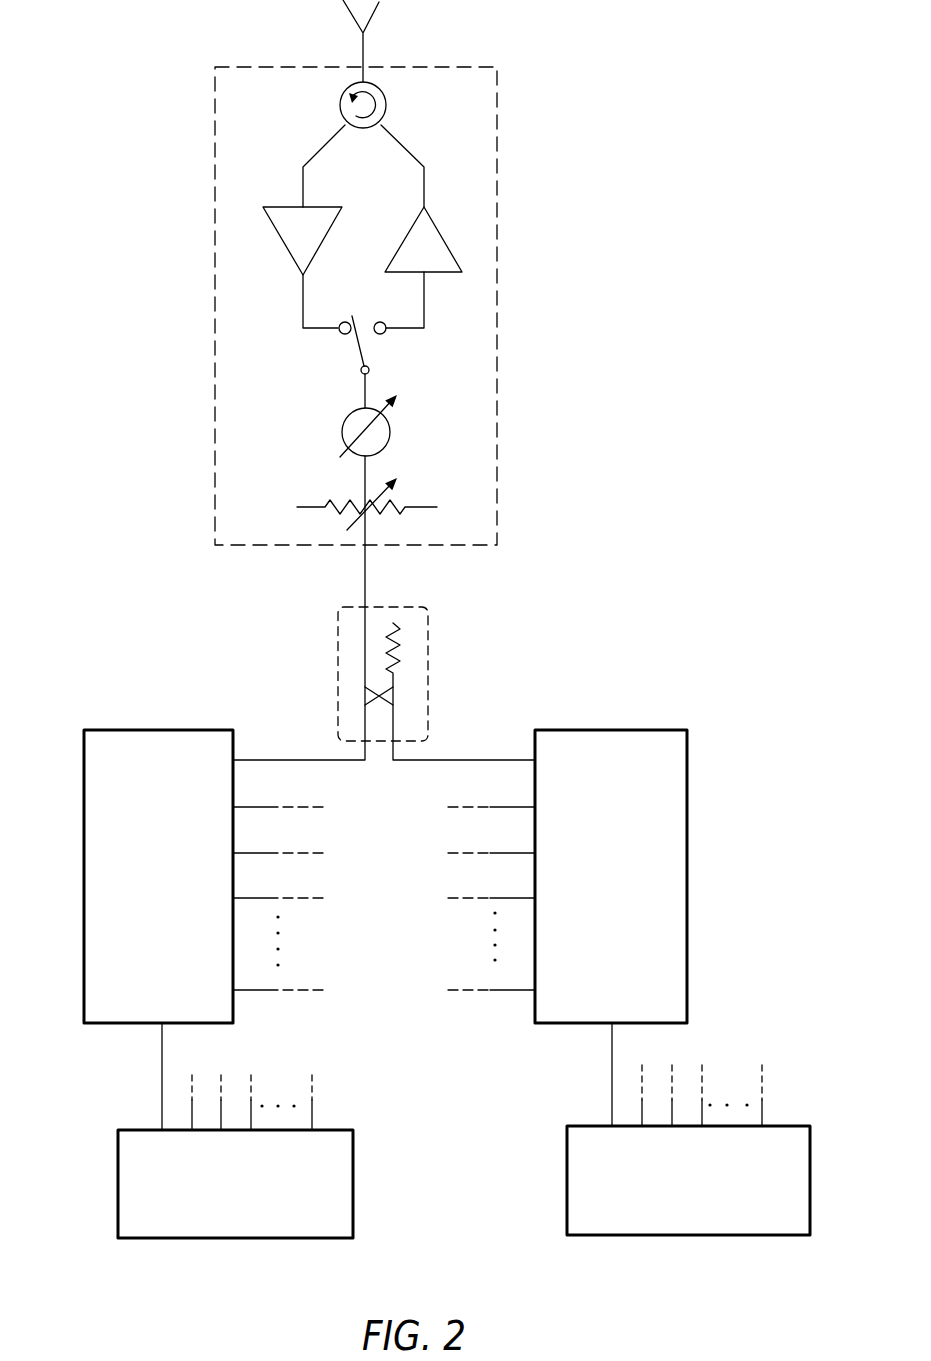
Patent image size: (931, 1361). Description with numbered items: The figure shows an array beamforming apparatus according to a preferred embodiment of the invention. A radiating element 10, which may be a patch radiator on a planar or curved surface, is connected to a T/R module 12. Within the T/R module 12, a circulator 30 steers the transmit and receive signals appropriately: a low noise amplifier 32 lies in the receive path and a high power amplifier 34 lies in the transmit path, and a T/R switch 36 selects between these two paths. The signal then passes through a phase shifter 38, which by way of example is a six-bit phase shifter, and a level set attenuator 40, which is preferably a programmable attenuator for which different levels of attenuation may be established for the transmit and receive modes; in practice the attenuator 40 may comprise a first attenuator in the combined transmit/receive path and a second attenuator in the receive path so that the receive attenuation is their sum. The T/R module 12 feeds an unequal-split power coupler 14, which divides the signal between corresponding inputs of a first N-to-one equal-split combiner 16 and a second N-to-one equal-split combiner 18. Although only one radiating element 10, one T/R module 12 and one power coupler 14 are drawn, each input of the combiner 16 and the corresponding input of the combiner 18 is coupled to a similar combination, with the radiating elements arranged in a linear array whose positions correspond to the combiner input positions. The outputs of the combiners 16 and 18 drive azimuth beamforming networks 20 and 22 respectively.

The radiating element 10 is at (349, 13).
The T/R module 12 is at (255, 62).
The unequal-split power coupler 14 is at (428, 641).
The first N:1 equal-split combiner 16 is at (147, 728).
The second N:1 equal-split combiner 18 is at (598, 729).
The azimuth beamforming network 20 is at (118, 1175).
The azimuth beamforming network 22 is at (567, 1167).
The circulator 30 is at (385, 98).
The low noise amplifier 32 is at (320, 253).
The high power amplifier 34 is at (438, 237).
The T/R switch 36 is at (365, 349).
The phase shifter 38 is at (385, 449).
The level set attenuator 40 is at (372, 512).